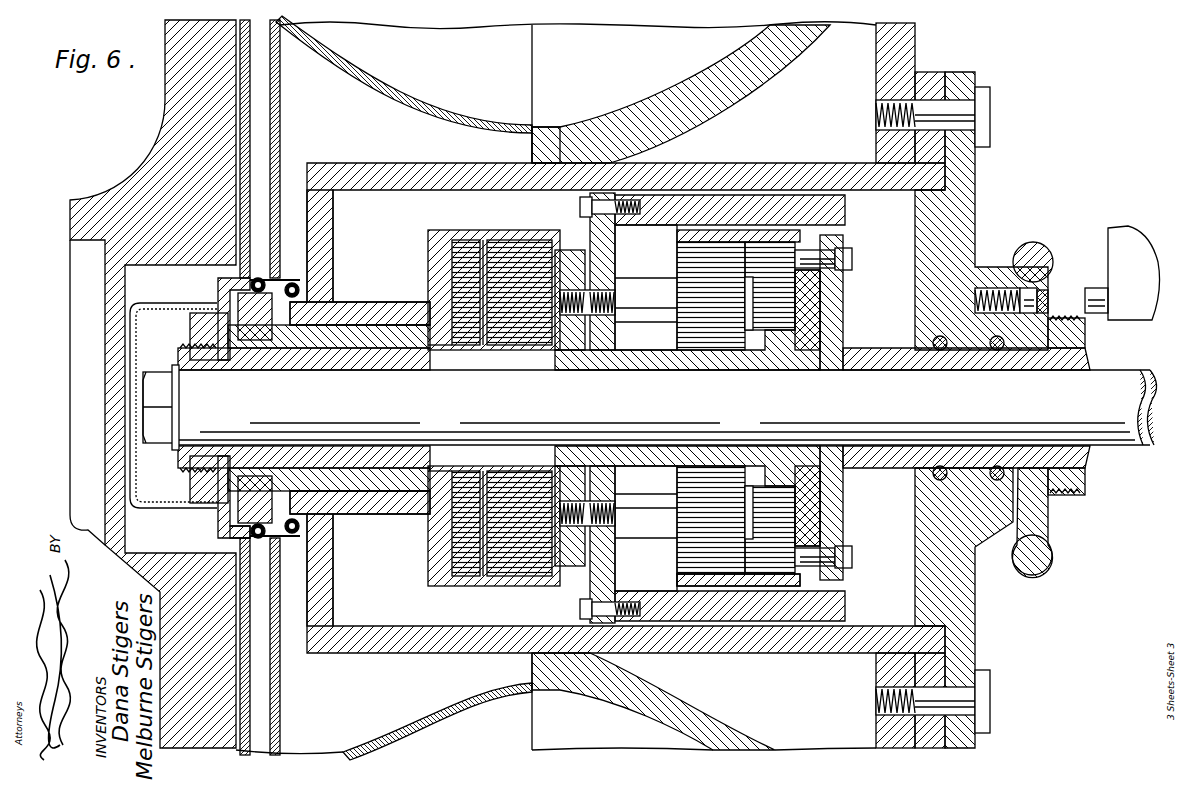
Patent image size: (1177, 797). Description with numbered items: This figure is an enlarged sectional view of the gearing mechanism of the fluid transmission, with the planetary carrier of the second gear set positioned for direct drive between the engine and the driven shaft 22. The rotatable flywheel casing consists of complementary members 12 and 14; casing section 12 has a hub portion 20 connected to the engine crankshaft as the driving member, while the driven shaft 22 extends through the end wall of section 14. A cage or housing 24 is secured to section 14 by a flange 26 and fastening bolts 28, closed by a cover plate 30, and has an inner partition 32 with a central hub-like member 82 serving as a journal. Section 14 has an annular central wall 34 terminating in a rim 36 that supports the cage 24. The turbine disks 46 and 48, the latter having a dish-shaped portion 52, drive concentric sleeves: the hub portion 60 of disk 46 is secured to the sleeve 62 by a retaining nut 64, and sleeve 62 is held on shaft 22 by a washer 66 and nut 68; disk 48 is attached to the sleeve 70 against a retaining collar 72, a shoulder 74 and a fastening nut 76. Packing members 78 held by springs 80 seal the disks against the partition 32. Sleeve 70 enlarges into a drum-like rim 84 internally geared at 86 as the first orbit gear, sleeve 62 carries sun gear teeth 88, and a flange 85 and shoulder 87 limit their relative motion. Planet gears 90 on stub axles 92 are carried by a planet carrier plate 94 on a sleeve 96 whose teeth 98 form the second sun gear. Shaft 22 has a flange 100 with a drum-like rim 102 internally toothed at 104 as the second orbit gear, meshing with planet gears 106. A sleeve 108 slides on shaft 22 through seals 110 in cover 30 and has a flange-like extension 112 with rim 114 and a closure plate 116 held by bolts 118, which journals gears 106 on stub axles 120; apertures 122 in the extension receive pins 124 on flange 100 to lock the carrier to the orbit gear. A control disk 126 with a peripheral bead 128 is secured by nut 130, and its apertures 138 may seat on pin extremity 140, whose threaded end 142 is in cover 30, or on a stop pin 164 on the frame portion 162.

The complementary casing member 12 is at (172, 107).
The complementary casing member 14 is at (905, 46).
The hub portion 20 is at (70, 243).
The driven shaft 22 is at (1115, 432).
The cage or housing 24 is at (745, 175).
The flange 26 is at (934, 84).
The fastening bolts 28 is at (990, 120).
The cover plate 30 is at (960, 212).
The end wall or partition 32 is at (322, 238).
The annular central wall 34 is at (650, 118).
The annular rim 36 is at (535, 154).
The disk-like portion 46 is at (245, 125).
The disk-like portion 48 is at (276, 145).
The dish-shaped portion 52 is at (440, 112).
The hub portion 60 is at (190, 333).
The sleeve 62 is at (250, 358).
The retaining nut 64 is at (190, 480).
The washer 66 is at (176, 410).
The fastening nut 68 is at (160, 385).
The concentric sleeve 70 is at (350, 340).
The retaining collar 72 is at (262, 340).
The shoulder 74 is at (288, 476).
The fastening nut 76 is at (255, 470).
The annular packing members 78 is at (338, 560).
The annular springs 80 is at (292, 566).
The hub-like member 82 is at (362, 308).
The drum-like flange or rim 84 is at (484, 298).
The annular flange 85 is at (442, 347).
The internal gear teeth 86 is at (494, 513).
The annular shoulder 87 is at (445, 463).
The circumferential gear teeth 88 is at (468, 347).
The planet gears 90 is at (515, 340).
The stub axles 92 is at (572, 288).
The planet carrier plate 94 is at (572, 480).
The sleeve 96 is at (636, 358).
The external gear teeth 98 is at (762, 350).
The flange 100 is at (832, 322).
The drum-like rim 102 is at (680, 580).
The internal teeth 104 is at (800, 242).
The planet gears 106 is at (712, 330).
The hub or sleeve member 108 is at (880, 355).
The annular seals 110 is at (945, 348).
The flange-like extension 112 is at (832, 512).
The rim 114 is at (766, 200).
The removable closure plate 116 is at (610, 248).
The fastening bolts 118 is at (580, 207).
The stub axles 120 is at (646, 408).
The apertures 122 is at (815, 570).
The pins 124 is at (870, 557).
The control disk 126 is at (1038, 515).
The peripheral bead 128 is at (1040, 556).
The fastening nut 130 is at (1072, 333).
The apertures 138 is at (1048, 300).
The pin extremity 140 is at (1052, 268).
The screw-threaded inner extremity 142 is at (996, 290).
The frame portion 162 is at (1130, 245).
The stop pin 164 is at (1096, 297).